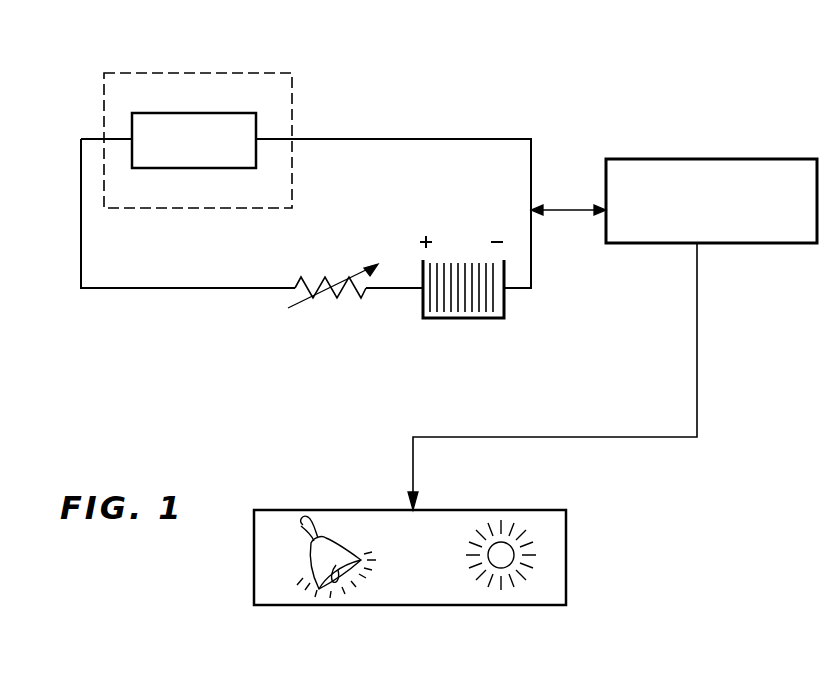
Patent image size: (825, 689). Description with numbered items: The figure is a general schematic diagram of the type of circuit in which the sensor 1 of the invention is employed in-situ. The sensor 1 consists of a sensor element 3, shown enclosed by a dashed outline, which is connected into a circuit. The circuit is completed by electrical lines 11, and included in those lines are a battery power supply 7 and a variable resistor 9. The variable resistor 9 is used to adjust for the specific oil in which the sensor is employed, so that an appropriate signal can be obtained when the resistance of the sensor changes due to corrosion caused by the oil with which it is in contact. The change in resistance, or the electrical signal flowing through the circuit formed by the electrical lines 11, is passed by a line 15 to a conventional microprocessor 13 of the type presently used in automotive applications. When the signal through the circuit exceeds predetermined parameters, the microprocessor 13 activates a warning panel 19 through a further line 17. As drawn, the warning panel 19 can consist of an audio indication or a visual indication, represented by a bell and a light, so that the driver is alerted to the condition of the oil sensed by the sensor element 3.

The sensor 1 is at (292, 73).
The sensor element 3 is at (253, 130).
The battery power supply 7 is at (480, 318).
The variable resistor 9 is at (338, 291).
The electrical lines 11 is at (470, 139).
The microprocessor 13 is at (725, 159).
The line 15 is at (565, 210).
The line 17 is at (697, 350).
The warning panel 19 is at (566, 566).